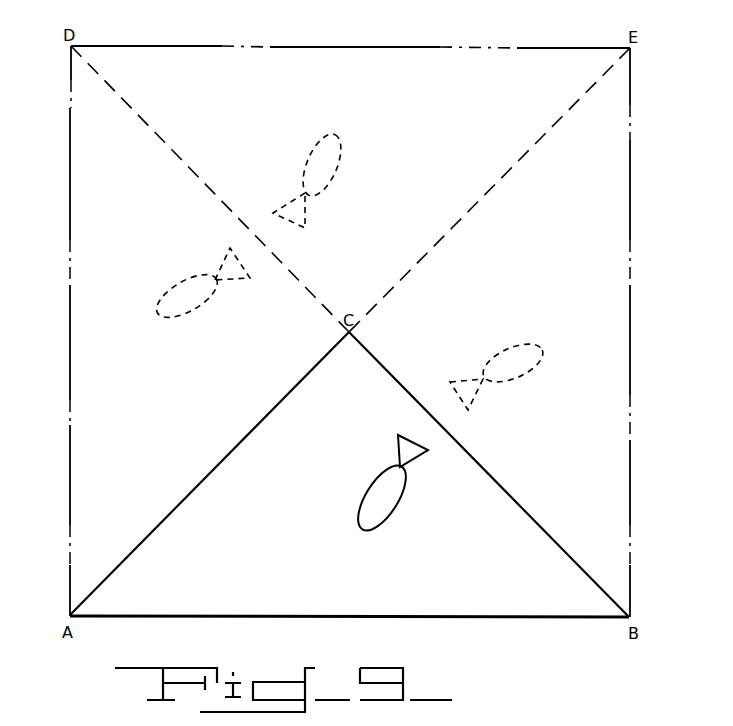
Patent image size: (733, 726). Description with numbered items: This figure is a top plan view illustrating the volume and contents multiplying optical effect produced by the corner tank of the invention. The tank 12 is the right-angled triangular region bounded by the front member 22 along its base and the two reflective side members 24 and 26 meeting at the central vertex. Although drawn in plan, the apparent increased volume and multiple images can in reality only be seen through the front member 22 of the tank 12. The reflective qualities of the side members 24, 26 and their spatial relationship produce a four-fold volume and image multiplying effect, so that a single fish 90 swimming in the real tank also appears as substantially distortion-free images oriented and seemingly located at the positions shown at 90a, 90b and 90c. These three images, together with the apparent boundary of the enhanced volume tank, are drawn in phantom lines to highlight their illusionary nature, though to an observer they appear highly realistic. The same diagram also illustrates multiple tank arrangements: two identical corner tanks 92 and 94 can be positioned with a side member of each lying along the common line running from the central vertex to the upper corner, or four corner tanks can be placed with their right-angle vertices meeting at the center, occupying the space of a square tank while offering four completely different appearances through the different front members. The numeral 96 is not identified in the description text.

The tank 12 is at (296, 520).
The front member 22 is at (205, 601).
The side member 24 is at (97, 588).
The side member 26 is at (597, 583).
The fish 90 is at (390, 518).
The fish image 90a is at (541, 358).
The fish image 90b is at (322, 133).
The fish image 90c is at (157, 312).
The corner tank 92 is at (612, 197).
The corner tank 94 is at (157, 67).
The left edge 96 is at (88, 233).